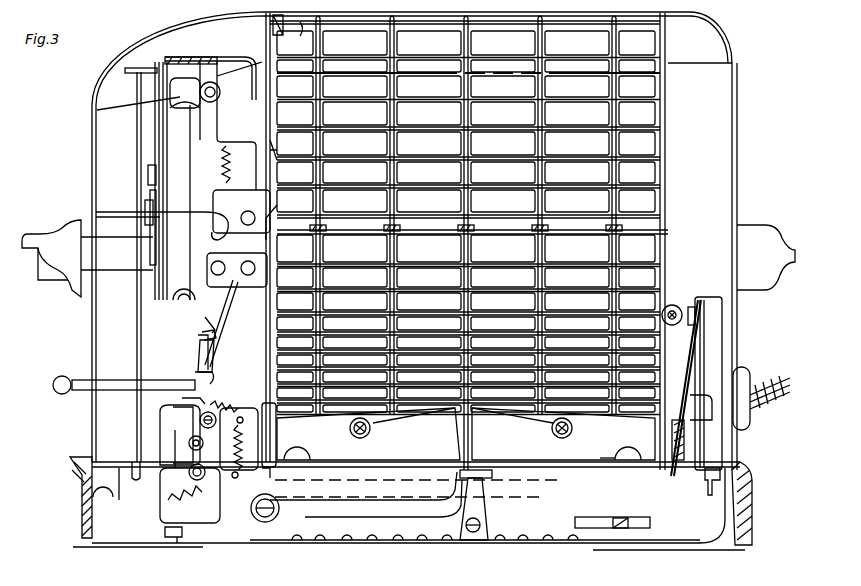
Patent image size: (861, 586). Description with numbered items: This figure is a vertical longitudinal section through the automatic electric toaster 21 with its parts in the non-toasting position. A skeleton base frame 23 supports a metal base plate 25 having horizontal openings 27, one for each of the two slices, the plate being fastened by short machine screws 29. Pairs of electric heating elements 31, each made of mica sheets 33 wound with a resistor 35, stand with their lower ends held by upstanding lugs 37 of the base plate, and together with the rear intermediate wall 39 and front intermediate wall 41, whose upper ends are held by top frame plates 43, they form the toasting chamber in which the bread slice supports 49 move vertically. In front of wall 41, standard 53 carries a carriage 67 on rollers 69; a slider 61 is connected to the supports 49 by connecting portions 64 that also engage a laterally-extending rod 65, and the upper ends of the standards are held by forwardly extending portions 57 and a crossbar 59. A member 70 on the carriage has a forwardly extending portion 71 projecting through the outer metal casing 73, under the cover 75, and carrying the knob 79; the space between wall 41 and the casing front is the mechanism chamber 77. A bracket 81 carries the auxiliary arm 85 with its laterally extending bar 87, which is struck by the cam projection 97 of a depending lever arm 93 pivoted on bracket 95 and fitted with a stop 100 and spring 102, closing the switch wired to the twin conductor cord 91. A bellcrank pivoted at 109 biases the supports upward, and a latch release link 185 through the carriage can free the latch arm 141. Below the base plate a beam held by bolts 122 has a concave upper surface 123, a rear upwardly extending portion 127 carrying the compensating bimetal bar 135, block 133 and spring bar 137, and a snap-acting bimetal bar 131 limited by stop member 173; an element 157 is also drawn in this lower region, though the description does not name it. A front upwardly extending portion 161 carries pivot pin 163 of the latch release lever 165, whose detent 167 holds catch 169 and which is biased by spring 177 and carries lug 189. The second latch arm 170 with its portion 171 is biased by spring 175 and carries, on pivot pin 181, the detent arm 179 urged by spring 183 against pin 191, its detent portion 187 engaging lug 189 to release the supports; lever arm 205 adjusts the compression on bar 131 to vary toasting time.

The automatic electric toaster 21 is at (778, 120).
The skeleton base frame 23 is at (80, 478).
The metal base plate 25 is at (718, 466).
The horizontal openings 27 is at (606, 461).
The short machine screws 29 is at (100, 503).
The electric heating elements 31 is at (648, 206).
The sheets of electric-insulating material 33 is at (468, 223).
The resistor 35 is at (370, 130).
The upstanding lugs 37 is at (296, 447).
The rear intermediate wall 39 is at (667, 119).
The front intermediate wall 41 is at (271, 84).
The top frame plates 43 is at (300, 36).
The bread slice supports 49 is at (562, 229).
The standard 53 is at (192, 159).
The forwardly extending portions 57 is at (237, 57).
The crossbar 59 is at (190, 56).
The slider 61 is at (170, 128).
The connecting portions 64 is at (271, 156).
The laterally-extending rod 65 is at (271, 213).
The carriage 67 is at (158, 137).
The rollers 69 is at (214, 116).
The member 70 is at (150, 215).
The forwardly extending portion 71 is at (107, 245).
The outer metal casing 73 is at (91, 148).
The cover 75 is at (725, 40).
The mechanism chamber 77 is at (120, 164).
The knob 79 is at (47, 225).
The bracket 81 is at (228, 252).
The auxiliary arm 85 is at (215, 342).
The laterally extending bar 87 is at (198, 336).
The twin conductor cord 91 is at (760, 390).
The depending lever arm 93 is at (208, 134).
The bracket 95 is at (222, 82).
The cam projection 97 is at (198, 350).
The stop 100 is at (214, 331).
The spring 102 is at (206, 318).
The pivot 109 is at (672, 306).
The bolts 122 is at (165, 533).
The concave upper surface 123 is at (556, 500).
The upwardly extending portion 127 is at (722, 335).
The snap-acting bimetal bar 131 is at (470, 470).
The block 133 is at (705, 470).
The compensating bimetal bar 135 is at (688, 358).
The spring bar 137 is at (706, 362).
The latch arm 141 is at (150, 478).
The bottom plate 157 is at (398, 461).
The upwardly extending portion 161 is at (229, 398).
The pivot pin 163 is at (232, 443).
The latch release lever 165 is at (110, 380).
The detent 167 is at (228, 372).
The catch 169 is at (228, 196).
The second latch arm 170 is at (354, 516).
The upwardly and inwardly extending portion 171 is at (445, 488).
The stop member 173 is at (486, 512).
The spring 175 is at (270, 468).
The spring 177 is at (271, 411).
The detent arm 179 is at (175, 430).
The pivot pin 181 is at (190, 476).
The spring 183 is at (190, 492).
The latch release link 185 is at (137, 292).
The detent portion 187 is at (168, 410).
The lug 189 is at (182, 398).
The pin 191 is at (189, 443).
The lever arm 205 is at (622, 518).